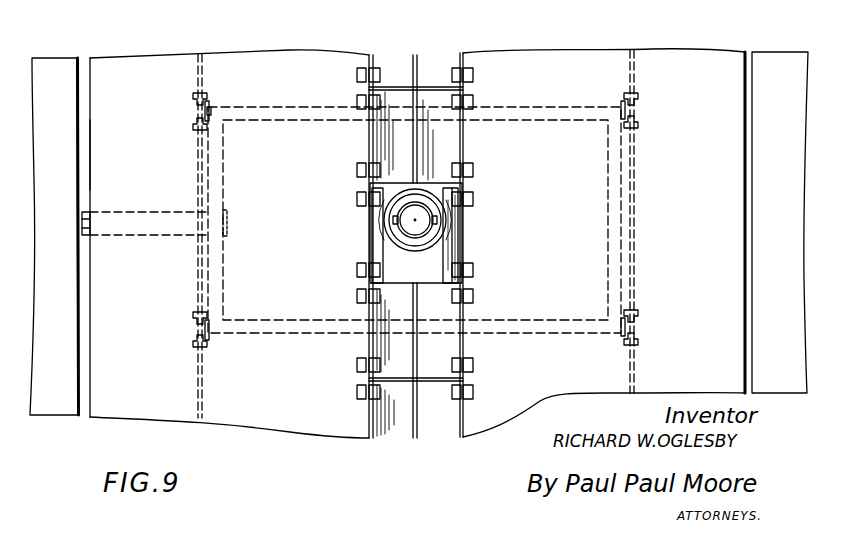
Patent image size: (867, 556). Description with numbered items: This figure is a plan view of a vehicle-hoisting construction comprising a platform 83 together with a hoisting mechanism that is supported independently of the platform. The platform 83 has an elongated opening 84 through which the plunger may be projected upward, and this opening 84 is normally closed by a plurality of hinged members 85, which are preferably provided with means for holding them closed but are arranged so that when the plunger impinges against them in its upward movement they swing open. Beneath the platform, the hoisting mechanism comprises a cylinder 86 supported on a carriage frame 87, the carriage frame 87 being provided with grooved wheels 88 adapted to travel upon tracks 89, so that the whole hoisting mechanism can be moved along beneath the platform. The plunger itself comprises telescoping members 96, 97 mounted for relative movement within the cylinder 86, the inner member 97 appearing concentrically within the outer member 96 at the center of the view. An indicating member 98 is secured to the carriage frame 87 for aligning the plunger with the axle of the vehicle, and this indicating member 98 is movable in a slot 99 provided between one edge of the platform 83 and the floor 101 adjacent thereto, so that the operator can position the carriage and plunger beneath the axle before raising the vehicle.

The platform 83 is at (158, 63).
The elongated opening 84 is at (395, 267).
The hinged members 85 is at (400, 62).
The cylinder 86 is at (408, 257).
The carriage frame 87 is at (307, 336).
The grooved wheels 88 is at (194, 102).
The tracks 89 is at (197, 272).
The telescoping member 96 is at (440, 242).
The telescoping member 97 is at (432, 233).
The indicating member 98 is at (88, 213).
The slot 99 is at (83, 154).
The floor 101 is at (45, 80).